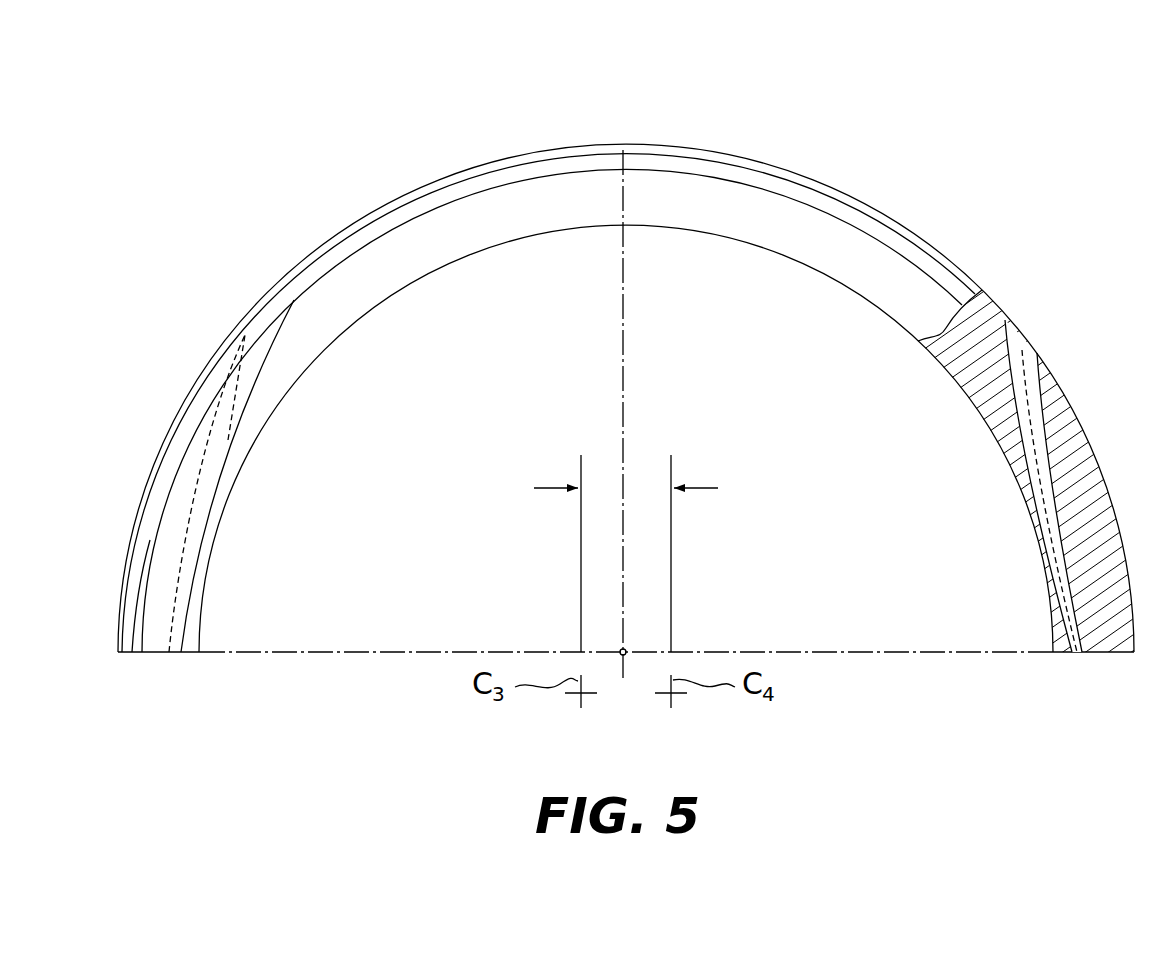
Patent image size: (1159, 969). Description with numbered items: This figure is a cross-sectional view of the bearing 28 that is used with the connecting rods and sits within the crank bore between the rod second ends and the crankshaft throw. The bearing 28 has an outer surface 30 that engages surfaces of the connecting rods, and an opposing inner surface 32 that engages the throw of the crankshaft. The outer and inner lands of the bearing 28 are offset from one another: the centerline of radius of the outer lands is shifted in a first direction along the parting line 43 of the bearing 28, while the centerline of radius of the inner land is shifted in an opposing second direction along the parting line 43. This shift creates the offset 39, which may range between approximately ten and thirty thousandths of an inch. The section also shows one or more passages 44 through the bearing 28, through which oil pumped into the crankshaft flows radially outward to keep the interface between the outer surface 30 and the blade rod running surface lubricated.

The bearing 28 is at (900, 153).
The outer surface 30 is at (585, 143).
The inner surface 32 is at (326, 346).
The offset 39 is at (641, 553).
The parting line 43 is at (170, 654).
The passages 44 is at (200, 466).